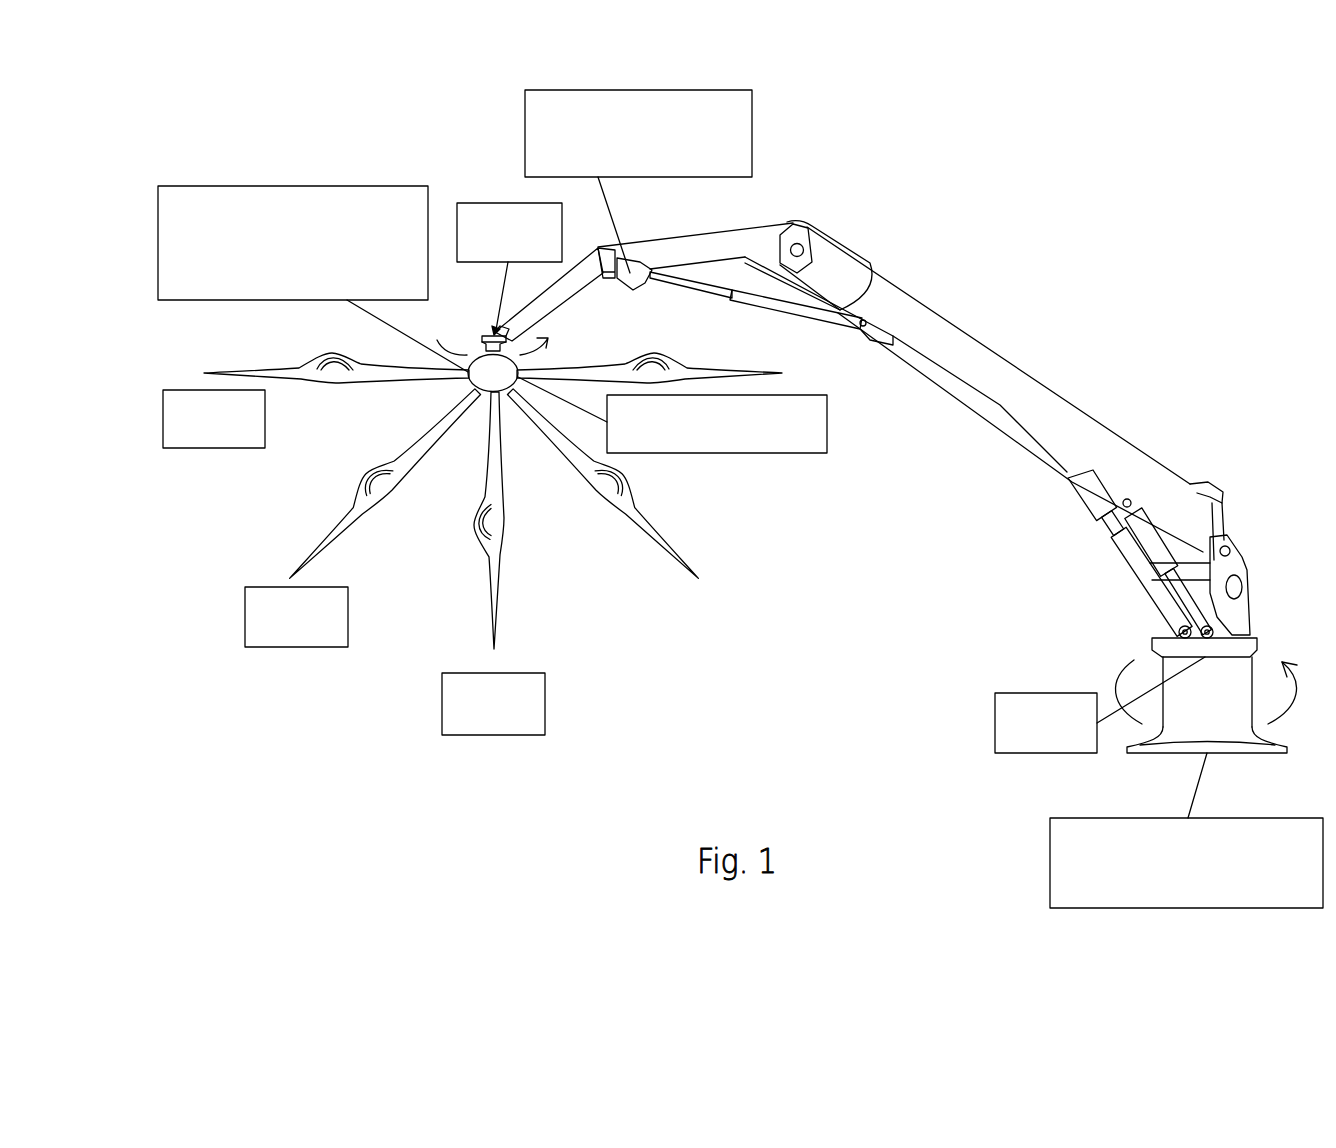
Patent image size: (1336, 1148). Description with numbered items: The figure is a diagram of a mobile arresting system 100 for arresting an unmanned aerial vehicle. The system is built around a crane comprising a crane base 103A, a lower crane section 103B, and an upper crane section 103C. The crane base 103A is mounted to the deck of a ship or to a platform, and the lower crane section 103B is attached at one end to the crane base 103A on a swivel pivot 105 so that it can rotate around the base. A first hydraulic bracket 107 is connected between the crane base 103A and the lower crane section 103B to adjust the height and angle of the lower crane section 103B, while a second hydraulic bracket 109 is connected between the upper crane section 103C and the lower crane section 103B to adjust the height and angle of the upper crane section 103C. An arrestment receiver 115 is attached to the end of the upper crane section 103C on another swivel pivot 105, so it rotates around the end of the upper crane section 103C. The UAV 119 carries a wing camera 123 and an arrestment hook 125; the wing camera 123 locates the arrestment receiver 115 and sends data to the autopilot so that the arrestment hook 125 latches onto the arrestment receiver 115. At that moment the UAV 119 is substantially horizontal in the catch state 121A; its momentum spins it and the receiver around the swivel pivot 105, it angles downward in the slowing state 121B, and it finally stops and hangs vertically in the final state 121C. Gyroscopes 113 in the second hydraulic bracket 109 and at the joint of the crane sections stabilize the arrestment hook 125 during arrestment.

The mobile arresting system 100 is at (1153, 203).
The crane base 103A is at (1050, 865).
The lower crane section 103B is at (1197, 527).
The upper crane section 103C is at (760, 240).
The swivel pivot 105 is at (487, 203).
The first hydraulic bracket 107 is at (1125, 563).
The second hydraulic bracket 109 is at (836, 326).
The gyroscopes 113 is at (752, 121).
The arrestment receiver 115 is at (468, 388).
The UAV 119 is at (500, 592).
The catch state 121A is at (213, 448).
The slowing state 121B is at (300, 647).
The final state 121C is at (495, 735).
The wing camera 123 is at (322, 186).
The arrestment hook 125 is at (717, 453).